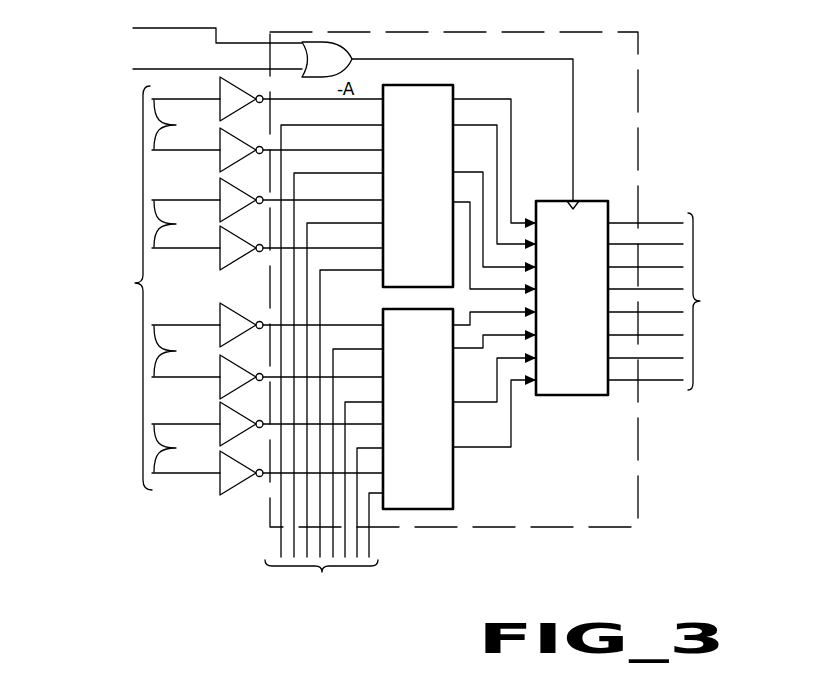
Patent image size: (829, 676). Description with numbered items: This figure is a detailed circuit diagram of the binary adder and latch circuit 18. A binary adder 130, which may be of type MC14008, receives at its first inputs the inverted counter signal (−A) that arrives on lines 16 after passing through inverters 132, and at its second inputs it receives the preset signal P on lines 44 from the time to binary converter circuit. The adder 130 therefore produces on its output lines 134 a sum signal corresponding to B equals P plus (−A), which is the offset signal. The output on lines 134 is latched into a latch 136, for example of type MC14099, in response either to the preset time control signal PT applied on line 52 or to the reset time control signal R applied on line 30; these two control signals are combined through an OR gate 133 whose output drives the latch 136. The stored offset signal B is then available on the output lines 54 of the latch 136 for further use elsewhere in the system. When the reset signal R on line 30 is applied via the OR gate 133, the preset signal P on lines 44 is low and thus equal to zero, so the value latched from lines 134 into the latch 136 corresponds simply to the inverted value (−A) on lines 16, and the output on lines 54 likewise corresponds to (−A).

The binary adder and latch circuit 18 is at (632, 48).
The reset line 30 is at (173, 28).
The preset time line 52 is at (156, 69).
The OR gate 133 is at (340, 56).
The lines carrying inverted counter value 16 is at (126, 288).
The inverters 132 is at (238, 90).
The preset value lines 44 is at (404, 542).
The binary adder 130 is at (443, 86).
The adder output lines 134 is at (470, 172).
The latch 136 is at (597, 200).
The output lines 54 is at (667, 267).